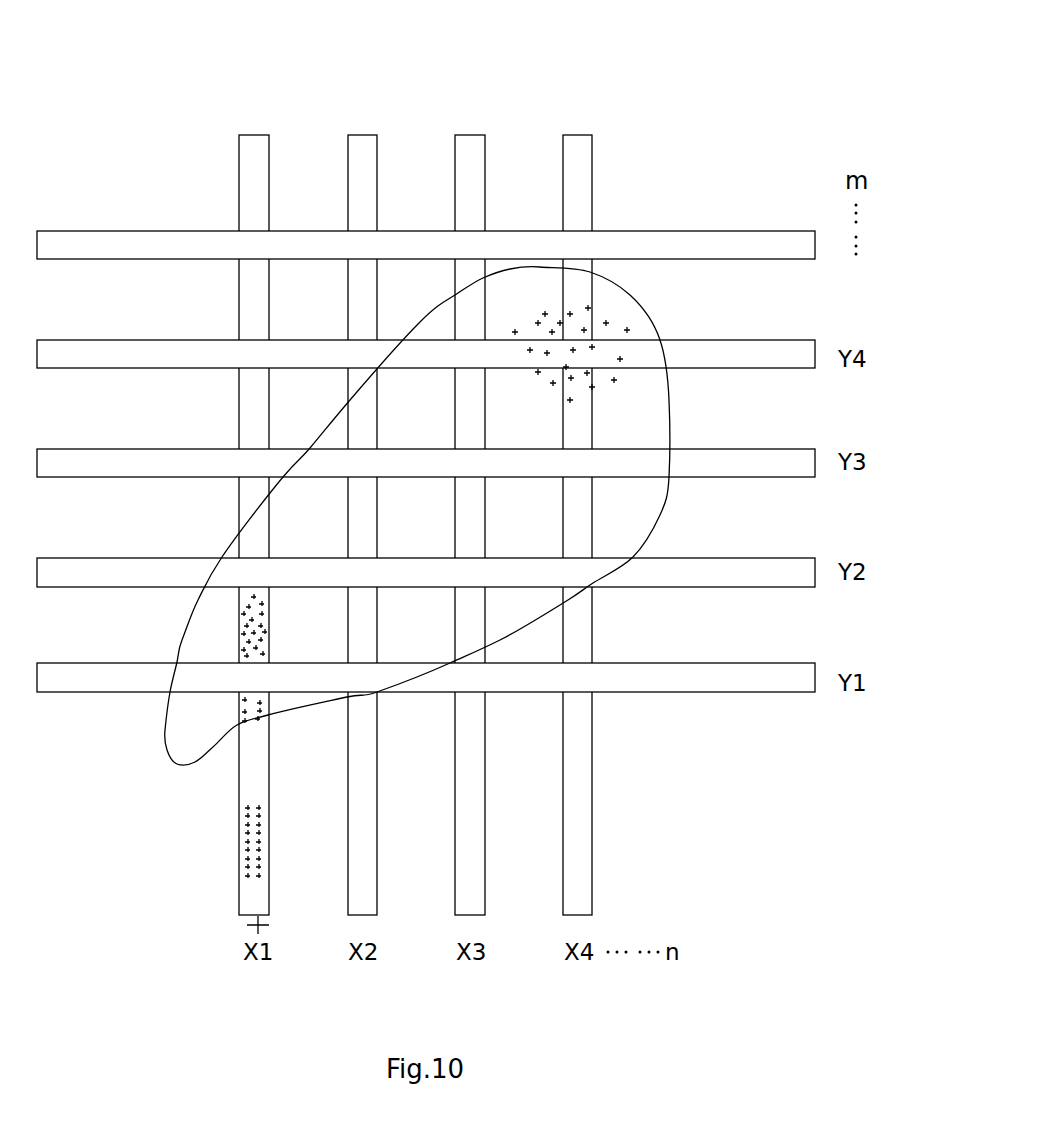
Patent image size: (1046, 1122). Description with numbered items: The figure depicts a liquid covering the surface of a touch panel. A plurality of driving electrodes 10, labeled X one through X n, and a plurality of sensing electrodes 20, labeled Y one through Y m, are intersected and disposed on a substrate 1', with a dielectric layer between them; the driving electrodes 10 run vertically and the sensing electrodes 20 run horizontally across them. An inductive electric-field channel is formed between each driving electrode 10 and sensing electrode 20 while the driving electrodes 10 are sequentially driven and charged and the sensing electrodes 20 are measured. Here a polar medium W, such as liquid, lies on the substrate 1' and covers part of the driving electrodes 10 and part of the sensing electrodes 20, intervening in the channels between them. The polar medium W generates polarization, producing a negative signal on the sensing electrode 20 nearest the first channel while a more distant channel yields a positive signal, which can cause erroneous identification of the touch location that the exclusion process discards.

The substrate 1' is at (426, 463).
The driving electrodes 10 is at (255, 174).
The sensing electrodes 20 is at (721, 243).
The polar medium W is at (177, 727).